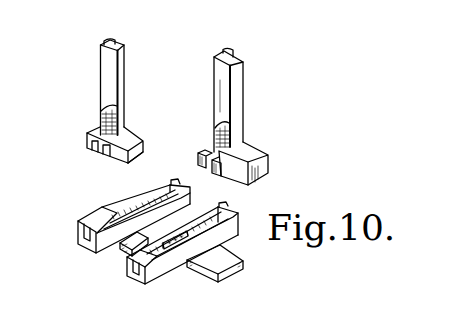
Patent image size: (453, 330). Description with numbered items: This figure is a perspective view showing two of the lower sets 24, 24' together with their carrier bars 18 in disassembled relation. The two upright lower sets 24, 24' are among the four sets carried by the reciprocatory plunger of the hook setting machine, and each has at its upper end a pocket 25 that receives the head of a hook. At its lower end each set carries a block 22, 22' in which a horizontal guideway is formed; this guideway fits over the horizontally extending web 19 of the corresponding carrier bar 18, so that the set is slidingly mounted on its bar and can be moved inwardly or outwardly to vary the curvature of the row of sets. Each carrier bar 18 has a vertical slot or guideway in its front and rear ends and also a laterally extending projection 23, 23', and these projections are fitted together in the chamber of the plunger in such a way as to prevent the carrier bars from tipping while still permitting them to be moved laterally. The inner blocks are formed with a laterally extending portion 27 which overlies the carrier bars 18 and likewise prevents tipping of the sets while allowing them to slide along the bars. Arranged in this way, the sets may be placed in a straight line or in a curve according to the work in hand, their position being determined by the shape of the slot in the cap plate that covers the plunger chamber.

The carrier bar 18 is at (230, 228).
The horizontally extending web 19 is at (157, 250).
The block 22 is at (261, 153).
The block 22' is at (139, 131).
The laterally extending projection 23 is at (224, 280).
The laterally extending projection 23' is at (106, 216).
The lower set 24 is at (261, 101).
The lower set 24' is at (141, 87).
The pocket 25 is at (243, 63).
The laterally extending portion 27 is at (122, 147).